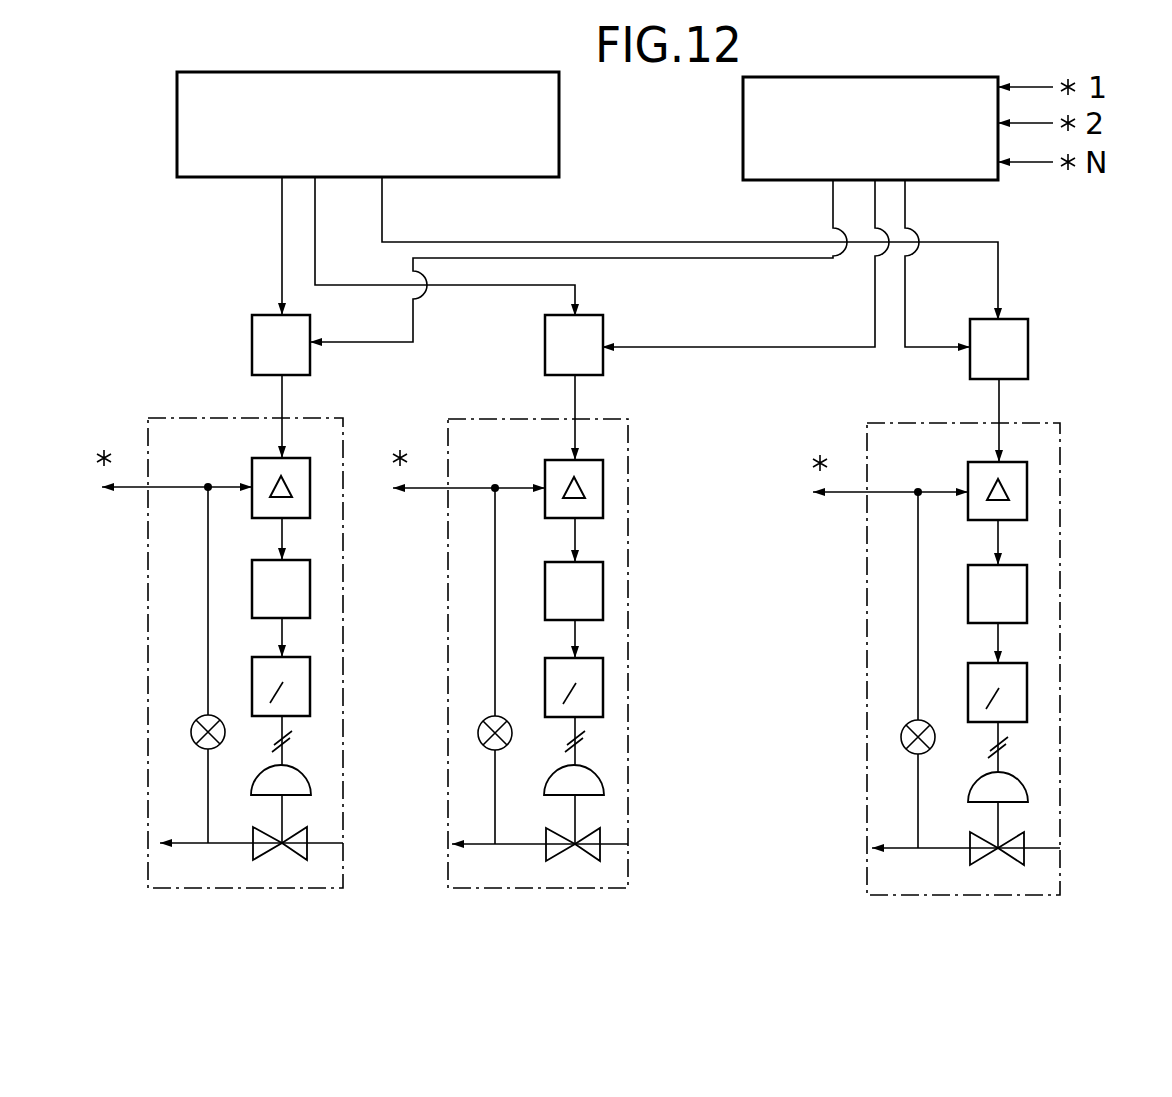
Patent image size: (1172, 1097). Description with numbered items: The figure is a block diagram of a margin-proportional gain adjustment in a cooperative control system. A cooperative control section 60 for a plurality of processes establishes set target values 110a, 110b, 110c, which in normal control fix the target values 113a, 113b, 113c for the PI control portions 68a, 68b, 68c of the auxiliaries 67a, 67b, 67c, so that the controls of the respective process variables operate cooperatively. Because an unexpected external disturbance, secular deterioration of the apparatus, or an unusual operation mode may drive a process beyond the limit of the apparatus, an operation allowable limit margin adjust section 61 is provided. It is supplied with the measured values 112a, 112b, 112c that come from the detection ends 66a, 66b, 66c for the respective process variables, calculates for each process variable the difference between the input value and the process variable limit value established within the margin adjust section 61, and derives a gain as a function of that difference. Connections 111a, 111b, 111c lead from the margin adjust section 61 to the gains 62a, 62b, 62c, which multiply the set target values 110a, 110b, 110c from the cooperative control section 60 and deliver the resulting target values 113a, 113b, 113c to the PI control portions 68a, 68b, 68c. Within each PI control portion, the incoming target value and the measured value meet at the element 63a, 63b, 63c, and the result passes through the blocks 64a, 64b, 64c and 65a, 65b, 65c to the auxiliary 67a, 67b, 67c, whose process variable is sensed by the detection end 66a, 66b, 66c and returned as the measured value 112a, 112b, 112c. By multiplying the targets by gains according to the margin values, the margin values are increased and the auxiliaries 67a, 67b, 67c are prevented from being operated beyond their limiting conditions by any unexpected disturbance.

The cooperative control section 60 is at (177, 100).
The operation allowable limit margin adjust section 61 is at (743, 103).
The target value 110a is at (282, 212).
The target value 110b is at (315, 208).
The target value 110c is at (382, 212).
The signal line 111a is at (833, 205).
The signal line 111b is at (875, 303).
The signal line 111c is at (905, 205).
The gain 62a is at (252, 338).
The gain 62b is at (545, 338).
The gain 62c is at (1028, 322).
The target value 113a is at (282, 398).
The target value 113b is at (575, 400).
The target value 113c is at (999, 405).
The PI control portion 68a is at (313, 417).
The PI control portion 68b is at (628, 465).
The PI control portion 68c is at (1060, 475).
The subtractor 63a is at (252, 460).
The subtractor 63b is at (545, 460).
The subtractor 63c is at (968, 463).
The measured value 112a is at (132, 490).
The measured value 112b is at (435, 492).
The measured value 112c is at (850, 495).
The PI controller 64a is at (310, 600).
The PI controller 64b is at (603, 605).
The PI controller 64c is at (1027, 608).
The E/P converter 65a is at (310, 697).
The E/P converter 65b is at (603, 700).
The E/P converter 65c is at (1027, 710).
The detection end 66a is at (208, 782).
The detection end 66b is at (495, 790).
The detection end 66c is at (918, 793).
The auxiliary 67a is at (298, 858).
The auxiliary 67b is at (590, 859).
The auxiliary 67c is at (1020, 870).